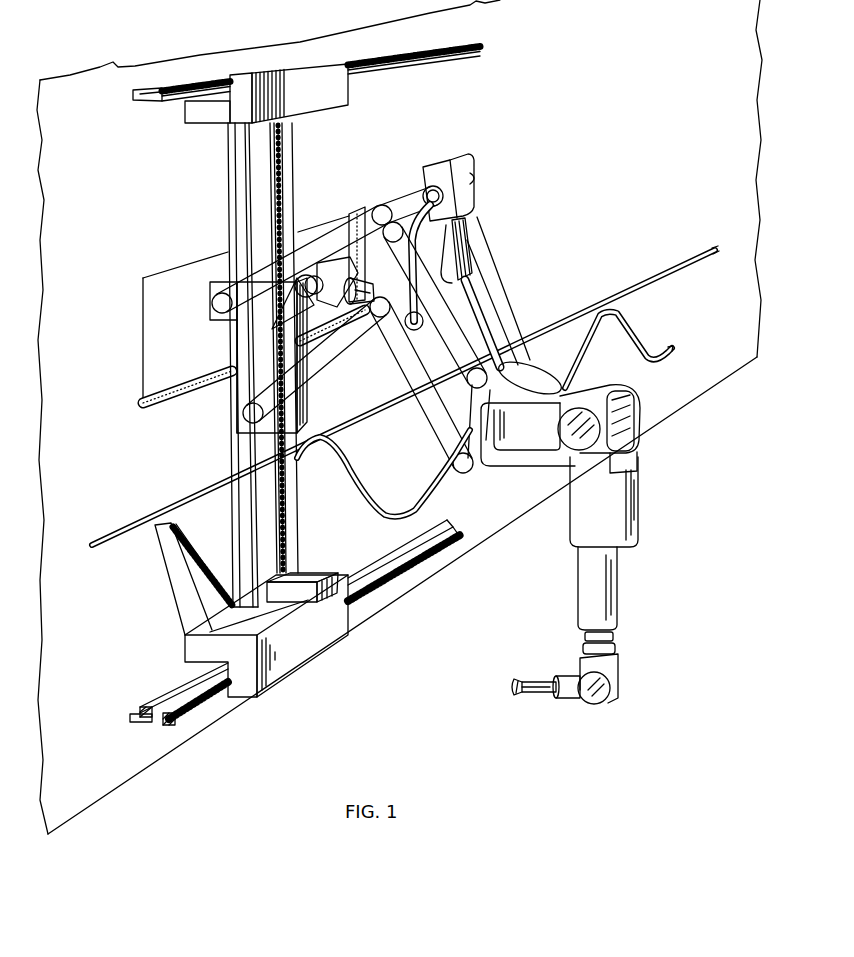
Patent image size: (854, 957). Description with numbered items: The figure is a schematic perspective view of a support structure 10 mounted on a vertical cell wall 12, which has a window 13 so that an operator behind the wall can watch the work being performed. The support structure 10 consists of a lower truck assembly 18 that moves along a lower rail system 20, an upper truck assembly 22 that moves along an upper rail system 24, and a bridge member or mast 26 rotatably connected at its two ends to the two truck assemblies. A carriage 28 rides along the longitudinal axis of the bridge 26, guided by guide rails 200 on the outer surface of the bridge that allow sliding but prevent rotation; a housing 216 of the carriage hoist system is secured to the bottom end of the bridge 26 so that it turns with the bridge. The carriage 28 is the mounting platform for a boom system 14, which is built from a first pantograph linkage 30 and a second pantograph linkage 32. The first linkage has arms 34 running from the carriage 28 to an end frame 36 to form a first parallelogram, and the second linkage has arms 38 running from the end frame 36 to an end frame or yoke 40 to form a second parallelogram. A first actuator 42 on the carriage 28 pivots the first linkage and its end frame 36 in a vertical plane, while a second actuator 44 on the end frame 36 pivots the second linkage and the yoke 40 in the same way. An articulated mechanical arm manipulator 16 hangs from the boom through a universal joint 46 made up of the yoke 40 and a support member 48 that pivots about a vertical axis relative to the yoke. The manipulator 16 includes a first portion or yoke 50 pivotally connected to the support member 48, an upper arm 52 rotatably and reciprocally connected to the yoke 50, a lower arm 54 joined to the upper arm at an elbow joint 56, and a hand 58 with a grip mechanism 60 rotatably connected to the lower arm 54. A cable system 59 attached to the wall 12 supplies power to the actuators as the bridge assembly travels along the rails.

The support structure 10 is at (226, 233).
The vertical cell wall 12 is at (134, 252).
The window 13 is at (175, 310).
The boom system 14 is at (500, 253).
The articulated mechanical arm manipulator 16 is at (592, 591).
The lower truck assembly 18 is at (285, 652).
The lower rail system 20 is at (163, 722).
The upper truck assembly 22 is at (298, 88).
The upper rail system 24 is at (467, 44).
The bridge member or mast 26 is at (232, 452).
The carriage 28 is at (270, 353).
The first pantograph linkage 30 is at (331, 211).
The second pantograph linkage 32 is at (516, 330).
The arms 34 is at (366, 225).
The end frame 36 is at (412, 203).
The arms 38 is at (480, 303).
The end frame or yoke 40 is at (503, 458).
The first actuator 42 is at (313, 268).
The second actuator 44 is at (469, 210).
The universal joint 46 is at (558, 366).
The support member 48 is at (633, 400).
The first portion or yoke 50 is at (627, 463).
The upper arm 52 is at (617, 575).
The lower arm 54 is at (566, 692).
The elbow joint 56 is at (598, 700).
The hand 58 is at (540, 680).
The cable system 59 is at (383, 510).
The grip mechanism 60 is at (520, 697).
The guide rails 200 is at (240, 440).
The housing 216 is at (340, 560).